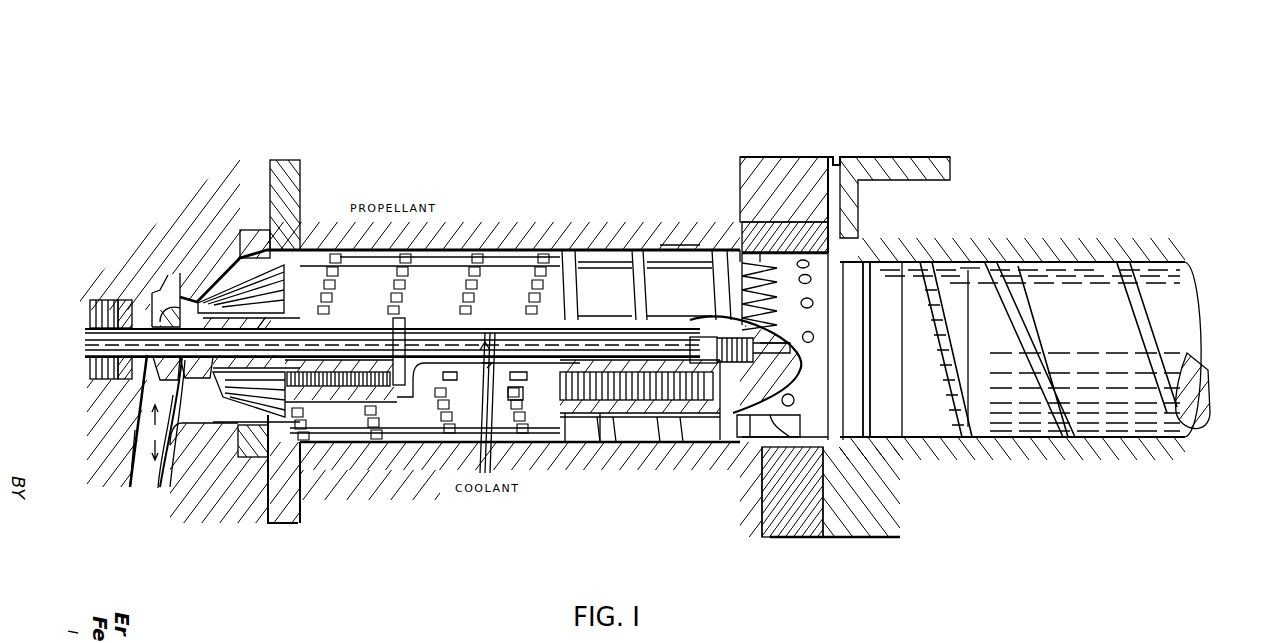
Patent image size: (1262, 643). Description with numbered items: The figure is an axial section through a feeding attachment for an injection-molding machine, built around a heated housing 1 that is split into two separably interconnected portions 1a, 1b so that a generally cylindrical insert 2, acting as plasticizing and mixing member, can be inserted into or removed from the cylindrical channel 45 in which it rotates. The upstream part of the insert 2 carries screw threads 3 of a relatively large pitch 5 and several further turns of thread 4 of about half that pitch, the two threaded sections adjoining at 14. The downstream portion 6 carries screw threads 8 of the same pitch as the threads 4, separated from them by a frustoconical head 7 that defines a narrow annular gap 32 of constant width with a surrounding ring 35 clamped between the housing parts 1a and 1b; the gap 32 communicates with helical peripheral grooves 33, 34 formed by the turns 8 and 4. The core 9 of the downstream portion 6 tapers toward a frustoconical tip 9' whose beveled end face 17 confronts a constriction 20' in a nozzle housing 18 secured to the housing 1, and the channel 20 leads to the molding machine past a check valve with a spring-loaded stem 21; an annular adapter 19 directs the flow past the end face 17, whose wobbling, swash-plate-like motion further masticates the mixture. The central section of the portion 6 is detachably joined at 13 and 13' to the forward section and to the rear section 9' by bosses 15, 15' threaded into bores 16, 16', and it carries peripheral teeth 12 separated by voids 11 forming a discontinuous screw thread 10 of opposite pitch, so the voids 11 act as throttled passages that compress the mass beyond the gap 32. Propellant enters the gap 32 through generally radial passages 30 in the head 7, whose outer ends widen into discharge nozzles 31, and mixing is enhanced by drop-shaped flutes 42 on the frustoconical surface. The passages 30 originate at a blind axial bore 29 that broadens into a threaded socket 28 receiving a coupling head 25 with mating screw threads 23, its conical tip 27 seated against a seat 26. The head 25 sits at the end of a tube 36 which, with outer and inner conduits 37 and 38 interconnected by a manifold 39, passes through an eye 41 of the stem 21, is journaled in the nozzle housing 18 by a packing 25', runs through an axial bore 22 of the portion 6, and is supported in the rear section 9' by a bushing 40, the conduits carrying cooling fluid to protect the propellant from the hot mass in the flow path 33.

The heated housing 1 is at (943, 140).
The housing portion 1a is at (818, 165).
The housing portion 1b is at (888, 172).
The cylindrical insert 2 is at (1214, 287).
The screw threads 3 is at (1023, 303).
The thread 4 is at (947, 413).
The pitch 5 is at (961, 369).
The downstream portion 6 is at (505, 262).
The frustoconical head 7 is at (840, 262).
The screw threads 8 is at (603, 433).
The core 9 is at (489, 482).
The frustoconical tip 9' is at (178, 303).
The discontinuous screw thread 10 is at (520, 427).
The voids 11 is at (520, 400).
The peripheral teeth 12 is at (513, 283).
The joint 13 is at (582, 463).
The joint 13' is at (272, 231).
The junction of threaded sections 14 is at (975, 408).
The boss 15 is at (640, 437).
The boss 15' is at (341, 449).
The bore 16 is at (706, 461).
The bore 16' is at (467, 433).
The beveled end face 17 is at (208, 395).
The nozzle housing 18 is at (215, 253).
The annular adapter 19 is at (248, 225).
The channel 20 is at (105, 421).
The constriction 20' is at (151, 449).
The spring-loaded stem 21 is at (153, 437).
The axial bore 22 is at (410, 345).
The screw threads 23 is at (735, 420).
The coupling head 25 is at (705, 190).
The packing 25' is at (108, 302).
The seat 26 is at (815, 312).
The conical tip 27 is at (800, 370).
The threaded socket 28 is at (740, 252).
The blind axial bore 29 is at (814, 340).
The radial passages 30 is at (790, 380).
The discharge nozzles 31 is at (813, 288).
The annular gap 32 is at (775, 250).
The helical peripheral groove 33 is at (742, 245).
The helical peripheral groove 34 is at (845, 262).
The ring 35 is at (803, 240).
The tube 36 is at (360, 340).
The outer conduits 37 is at (445, 355).
The inner conduits 38 is at (603, 332).
The manifold 39 is at (693, 332).
The bushing 40 is at (227, 400).
The eye 41 is at (167, 367).
The flutes 42 is at (765, 440).
The cylindrical channel 45 is at (665, 252).